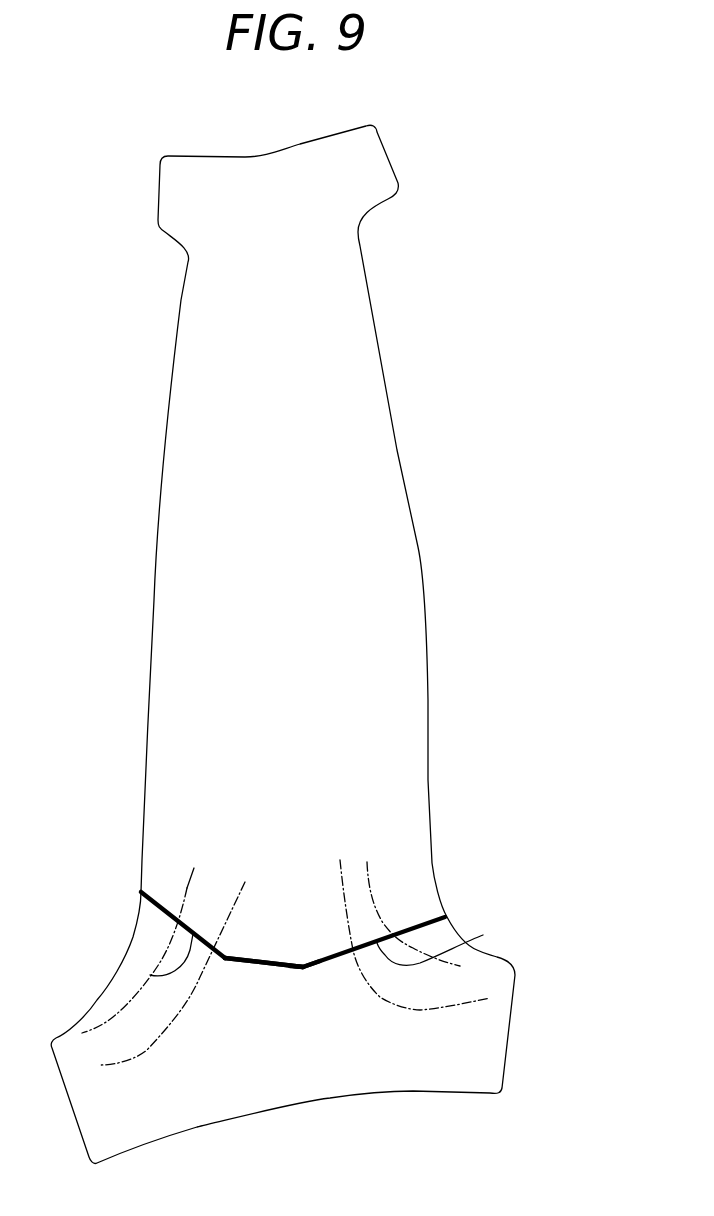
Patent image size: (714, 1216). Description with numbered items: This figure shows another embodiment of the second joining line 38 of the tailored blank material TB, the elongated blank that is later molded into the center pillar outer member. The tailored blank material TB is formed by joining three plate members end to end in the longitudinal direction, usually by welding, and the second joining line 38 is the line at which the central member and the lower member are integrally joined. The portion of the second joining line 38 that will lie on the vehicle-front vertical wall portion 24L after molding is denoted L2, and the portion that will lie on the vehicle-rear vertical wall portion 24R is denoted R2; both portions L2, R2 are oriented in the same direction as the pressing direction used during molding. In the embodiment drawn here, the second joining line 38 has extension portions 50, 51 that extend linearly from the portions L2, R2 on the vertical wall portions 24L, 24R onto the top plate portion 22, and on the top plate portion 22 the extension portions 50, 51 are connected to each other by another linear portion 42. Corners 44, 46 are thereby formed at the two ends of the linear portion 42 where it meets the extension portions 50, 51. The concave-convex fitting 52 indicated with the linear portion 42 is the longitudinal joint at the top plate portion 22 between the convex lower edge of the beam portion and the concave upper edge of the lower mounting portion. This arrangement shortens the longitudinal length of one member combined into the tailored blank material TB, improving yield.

The tailored blank material TB is at (417, 545).
The top plate portion 22 is at (263, 877).
The vertical wall portion 24L is at (185, 886).
The vertical wall portion 24R is at (373, 893).
The second joining line 38 is at (418, 918).
The linear portion 42 is at (265, 960).
The concave-convex fitting 52 is at (294, 895).
The corner 44 is at (226, 961).
The corner 46 is at (303, 969).
The extension portion 50 is at (215, 948).
The extension portion 51 is at (330, 958).
The portion of the second joining line L2 is at (150, 975).
The portion of the second joining line R2 is at (483, 935).